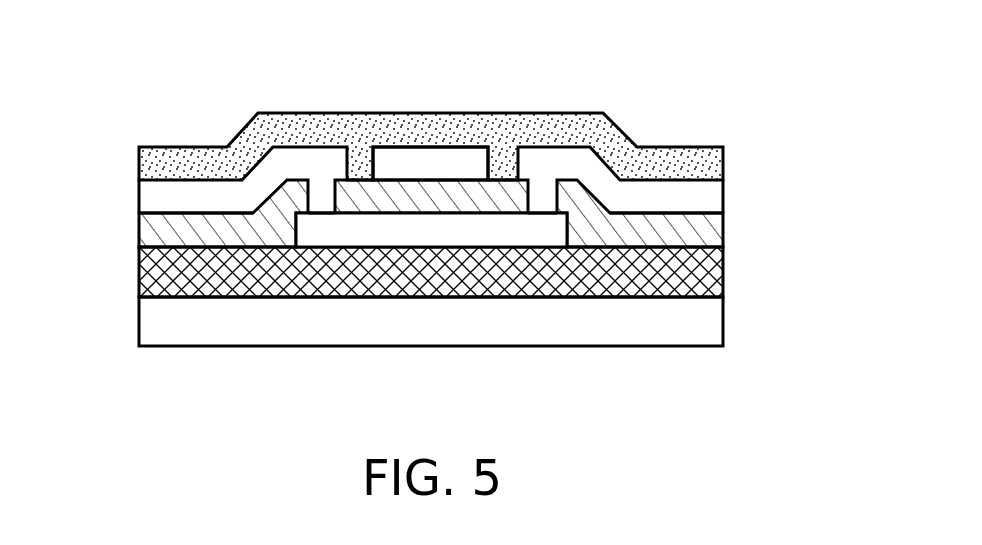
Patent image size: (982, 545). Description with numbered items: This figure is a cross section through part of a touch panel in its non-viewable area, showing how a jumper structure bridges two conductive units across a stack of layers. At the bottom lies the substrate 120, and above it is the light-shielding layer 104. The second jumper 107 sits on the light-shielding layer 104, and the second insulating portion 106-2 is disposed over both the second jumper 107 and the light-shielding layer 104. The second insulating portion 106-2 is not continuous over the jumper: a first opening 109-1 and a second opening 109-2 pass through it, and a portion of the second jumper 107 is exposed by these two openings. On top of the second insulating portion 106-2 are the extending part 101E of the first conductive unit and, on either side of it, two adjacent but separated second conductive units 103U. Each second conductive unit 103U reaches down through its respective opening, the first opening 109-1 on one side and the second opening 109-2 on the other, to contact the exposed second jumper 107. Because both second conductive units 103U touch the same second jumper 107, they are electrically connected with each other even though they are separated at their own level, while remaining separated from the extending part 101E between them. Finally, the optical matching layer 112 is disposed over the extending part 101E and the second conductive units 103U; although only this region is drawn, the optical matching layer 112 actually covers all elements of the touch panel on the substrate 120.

The optical matching layer 112 is at (140, 165).
The second conductive unit 103U is at (140, 197).
The second insulating portion 106-2 is at (140, 228).
The light-shielding layer 104 is at (140, 271).
The substrate 120 is at (140, 320).
The second jumper 107 is at (433, 232).
The extending part 101E is at (432, 163).
The first opening 109-1 is at (542, 193).
The second opening 109-2 is at (321, 193).